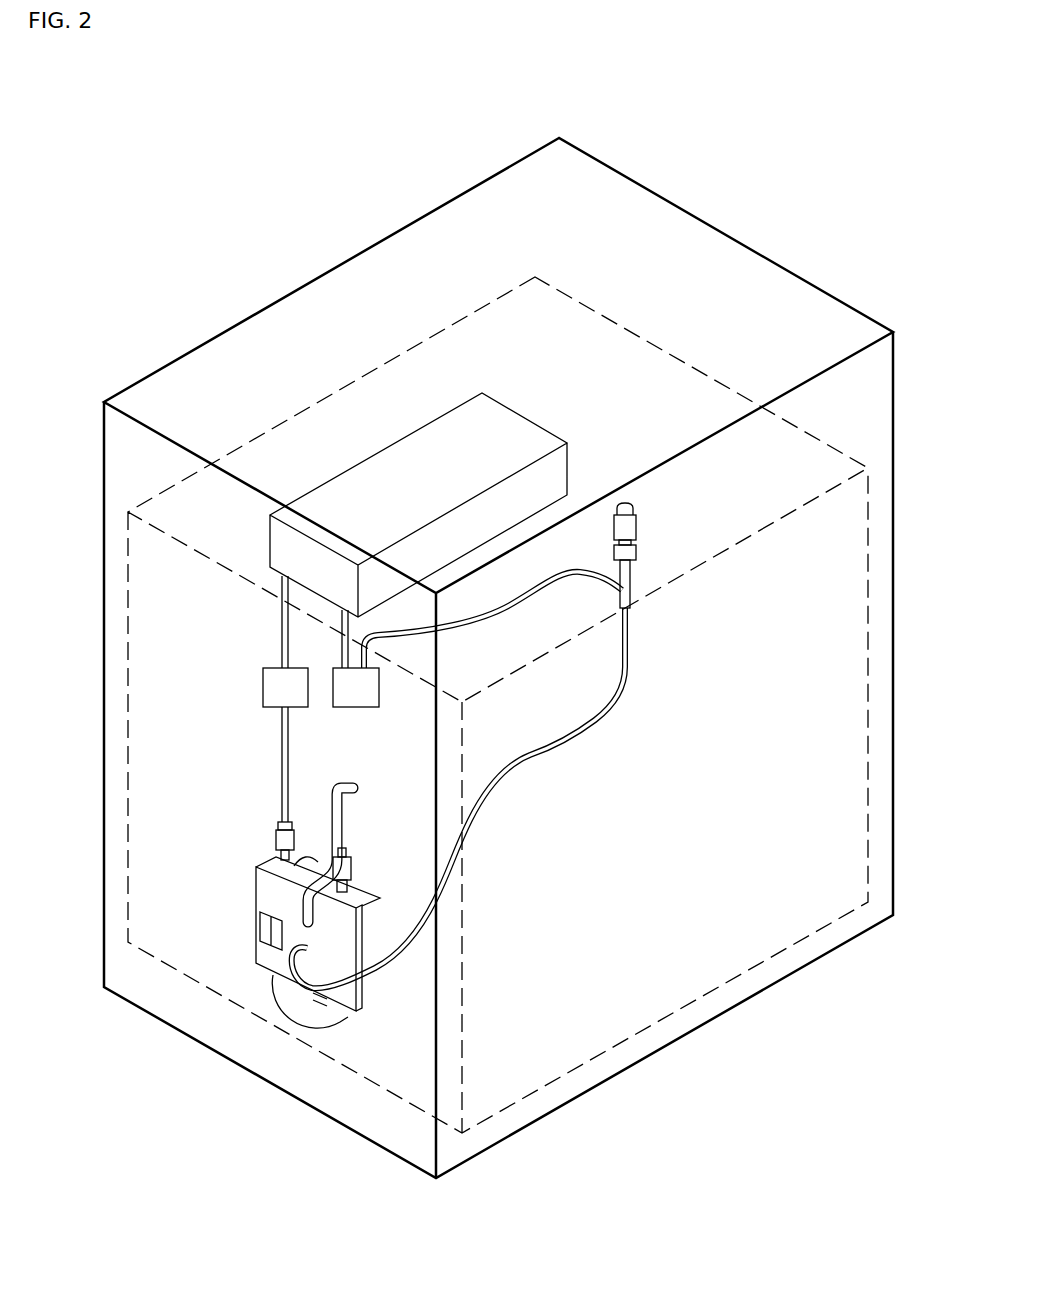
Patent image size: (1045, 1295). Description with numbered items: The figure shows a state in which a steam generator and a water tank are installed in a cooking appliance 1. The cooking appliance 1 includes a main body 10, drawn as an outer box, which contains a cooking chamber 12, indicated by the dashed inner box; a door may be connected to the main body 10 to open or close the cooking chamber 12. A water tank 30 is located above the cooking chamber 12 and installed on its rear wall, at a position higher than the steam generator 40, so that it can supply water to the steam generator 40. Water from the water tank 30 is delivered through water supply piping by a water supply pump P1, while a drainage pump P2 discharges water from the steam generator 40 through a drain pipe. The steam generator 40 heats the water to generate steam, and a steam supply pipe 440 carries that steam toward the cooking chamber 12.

The cooking appliance 1 is at (449, 160).
The main body 10 is at (893, 447).
The cooking chamber 12 is at (815, 733).
The water tank 30 is at (383, 468).
The steam generator 40 is at (288, 1024).
The steam supply pipe 440 is at (340, 822).
The water supply pump P1 is at (356, 658).
The drainage pump P2 is at (285, 699).